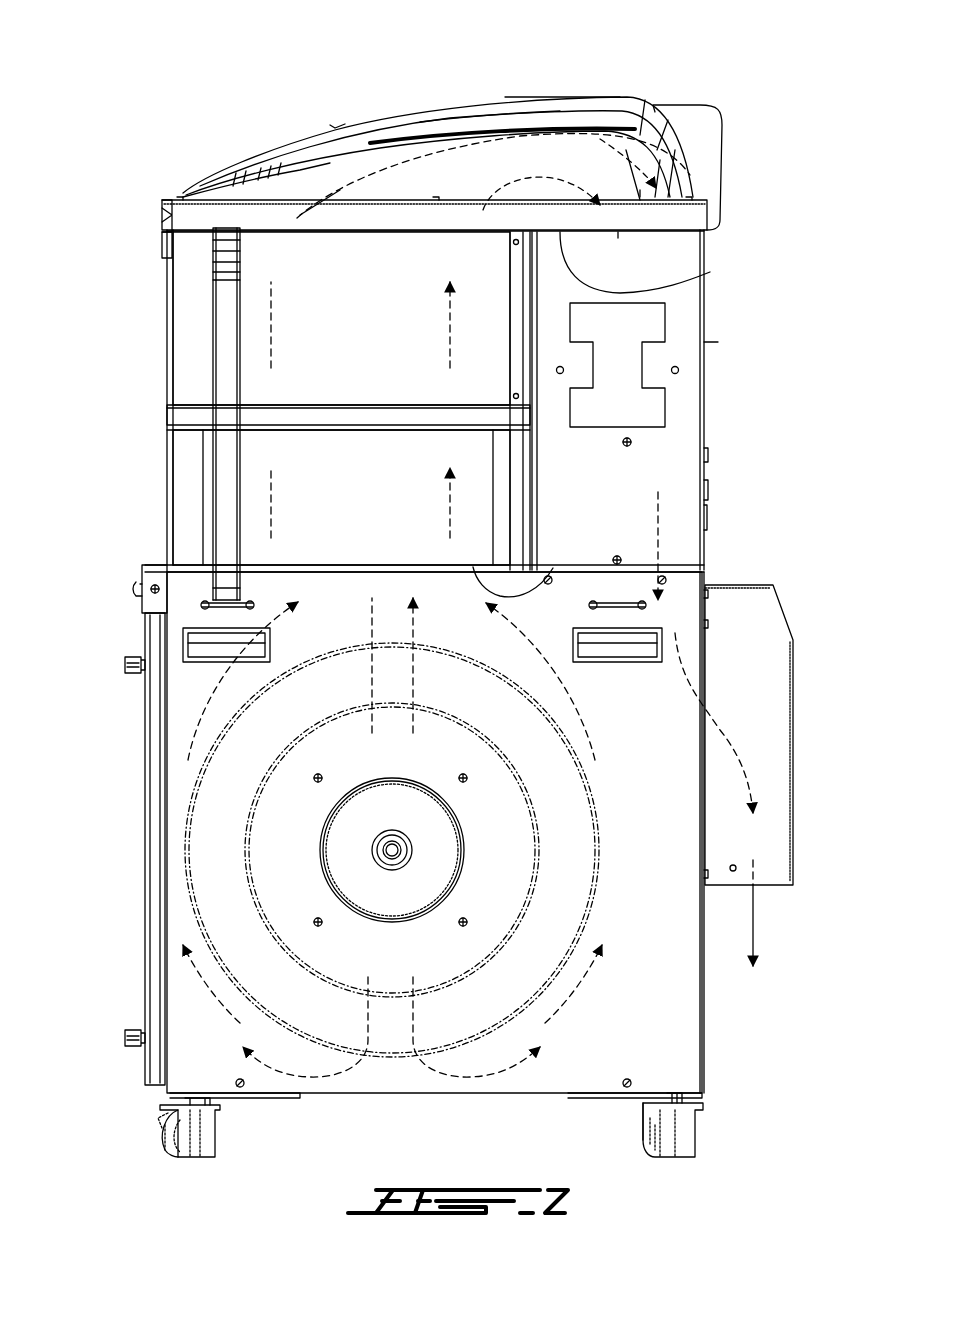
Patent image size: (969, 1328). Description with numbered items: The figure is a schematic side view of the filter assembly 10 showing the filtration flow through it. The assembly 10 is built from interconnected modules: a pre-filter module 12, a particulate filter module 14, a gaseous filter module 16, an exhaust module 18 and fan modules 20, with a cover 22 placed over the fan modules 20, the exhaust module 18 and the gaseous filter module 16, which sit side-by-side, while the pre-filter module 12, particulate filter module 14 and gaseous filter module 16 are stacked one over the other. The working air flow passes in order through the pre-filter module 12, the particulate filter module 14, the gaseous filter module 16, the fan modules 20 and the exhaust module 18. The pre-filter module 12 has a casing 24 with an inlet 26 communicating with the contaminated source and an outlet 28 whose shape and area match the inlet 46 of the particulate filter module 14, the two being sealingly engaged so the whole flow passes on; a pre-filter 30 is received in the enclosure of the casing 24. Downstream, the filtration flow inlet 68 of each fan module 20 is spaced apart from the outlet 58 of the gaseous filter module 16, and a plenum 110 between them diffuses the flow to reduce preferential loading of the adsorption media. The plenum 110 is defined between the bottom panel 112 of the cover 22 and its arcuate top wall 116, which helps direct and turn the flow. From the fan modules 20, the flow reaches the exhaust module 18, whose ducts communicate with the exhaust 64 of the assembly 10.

The filter assembly 10 is at (148, 146).
The pre-filter module 12 is at (188, 890).
The particulate filter module 14 is at (184, 511).
The gaseous filter module 16 is at (184, 361).
The exhaust module 18 is at (772, 582).
The fan module 20 is at (672, 465).
The cover 22 is at (568, 92).
The casing 24 is at (675, 1037).
The inlet 26 is at (390, 888).
The outlet 28 is at (322, 565).
The pre-filter 30 is at (505, 1030).
The inlet 46 is at (553, 568).
The outlet 58 is at (318, 236).
The exhaust 64 is at (770, 728).
The filtration flow inlet 68 is at (618, 235).
The plenum 110 is at (442, 170).
The bottom panel 112 is at (700, 270).
The top wall 116 is at (508, 97).